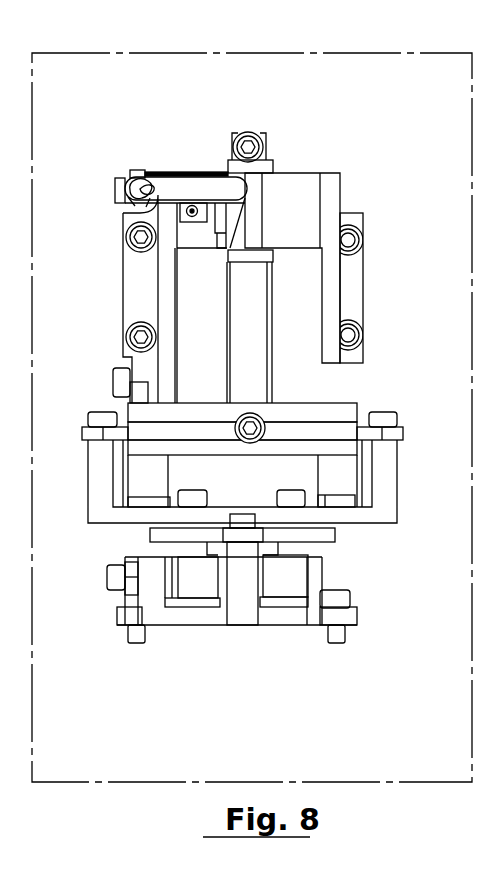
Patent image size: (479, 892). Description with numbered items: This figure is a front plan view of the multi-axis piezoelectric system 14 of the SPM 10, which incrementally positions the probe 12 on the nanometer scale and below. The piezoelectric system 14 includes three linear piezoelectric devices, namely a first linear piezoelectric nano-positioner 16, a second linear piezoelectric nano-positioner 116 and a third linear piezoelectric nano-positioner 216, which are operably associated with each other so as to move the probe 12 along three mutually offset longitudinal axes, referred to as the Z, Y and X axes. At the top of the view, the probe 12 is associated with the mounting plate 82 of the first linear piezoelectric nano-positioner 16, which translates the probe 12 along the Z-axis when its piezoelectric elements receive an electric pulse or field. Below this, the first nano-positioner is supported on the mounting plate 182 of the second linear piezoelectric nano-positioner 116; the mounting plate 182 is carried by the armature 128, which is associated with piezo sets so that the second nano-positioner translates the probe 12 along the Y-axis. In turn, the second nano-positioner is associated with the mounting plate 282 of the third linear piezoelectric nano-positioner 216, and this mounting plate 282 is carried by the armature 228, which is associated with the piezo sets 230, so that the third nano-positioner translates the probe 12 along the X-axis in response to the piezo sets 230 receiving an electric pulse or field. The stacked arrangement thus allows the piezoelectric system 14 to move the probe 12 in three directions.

The SPM 10 is at (292, 52).
The probe 12 is at (179, 205).
The multi-axis piezoelectric system 14 is at (346, 172).
The first linear piezoelectric nano-positioner 16 is at (138, 167).
The mounting plate 82 is at (172, 167).
The second linear piezoelectric nano-positioner 116 is at (87, 421).
The armature 128 is at (347, 500).
The mounting plate 182 is at (359, 421).
The third linear piezoelectric nano-positioner 216 is at (127, 555).
The armature 228 is at (217, 585).
The piezo sets 230 is at (187, 600).
The mounting plate 282 is at (342, 539).